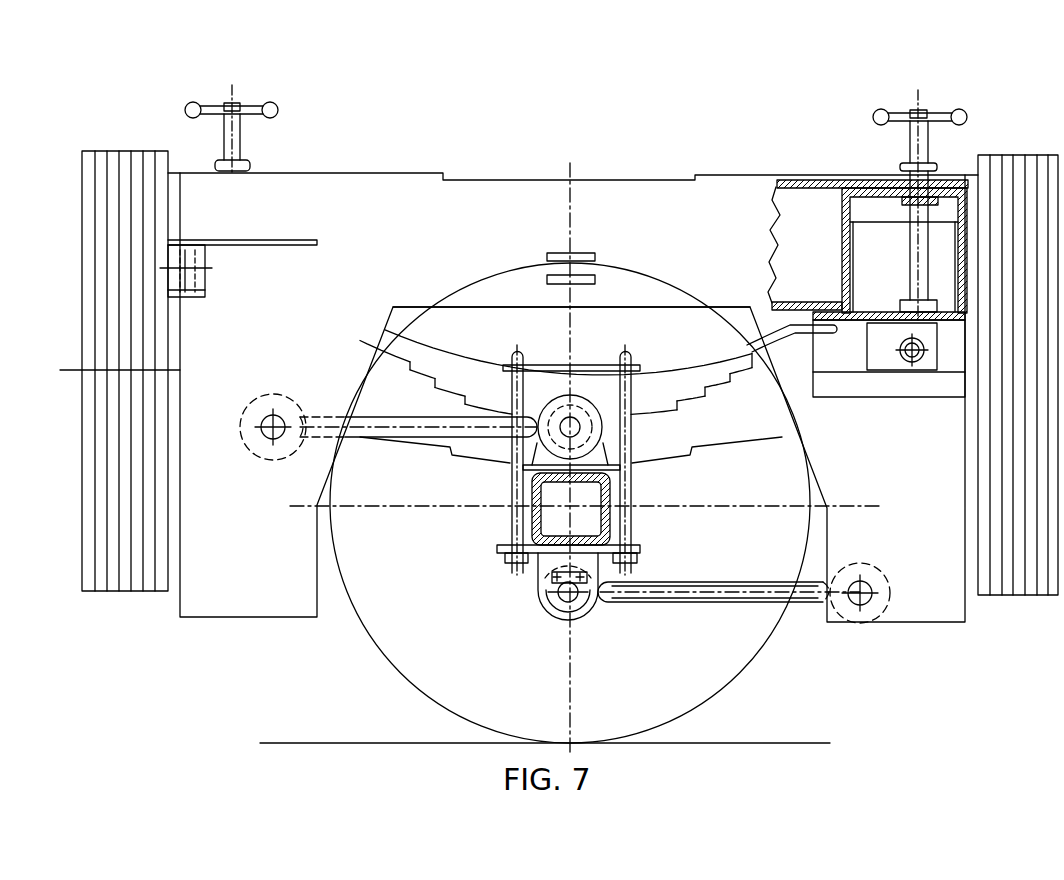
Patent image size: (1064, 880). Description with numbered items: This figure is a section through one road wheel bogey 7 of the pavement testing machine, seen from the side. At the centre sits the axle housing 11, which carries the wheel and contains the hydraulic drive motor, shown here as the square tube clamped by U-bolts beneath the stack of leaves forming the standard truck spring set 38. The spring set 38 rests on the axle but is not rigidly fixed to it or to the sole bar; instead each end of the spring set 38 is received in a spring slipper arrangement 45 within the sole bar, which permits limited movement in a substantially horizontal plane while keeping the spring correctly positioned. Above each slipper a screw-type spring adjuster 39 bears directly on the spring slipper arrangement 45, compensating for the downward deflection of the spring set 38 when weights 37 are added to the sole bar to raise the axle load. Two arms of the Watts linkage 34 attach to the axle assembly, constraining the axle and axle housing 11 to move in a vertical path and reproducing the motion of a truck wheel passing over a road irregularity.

The road wheel bogey 7 is at (578, 212).
The axle housing 11 is at (603, 493).
The Watts linkage 34 is at (378, 415).
The weights 37 is at (108, 148).
The spring set 38 is at (668, 386).
The spring adjuster 39 is at (266, 100).
The spring slipper arrangement 45 is at (822, 303).